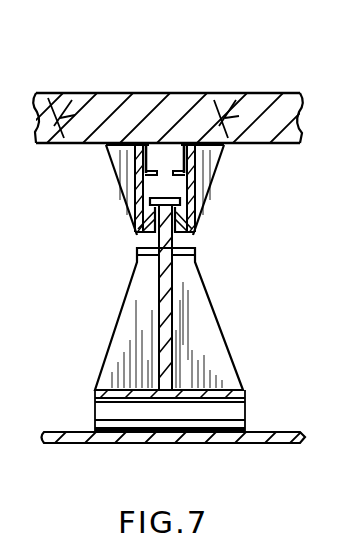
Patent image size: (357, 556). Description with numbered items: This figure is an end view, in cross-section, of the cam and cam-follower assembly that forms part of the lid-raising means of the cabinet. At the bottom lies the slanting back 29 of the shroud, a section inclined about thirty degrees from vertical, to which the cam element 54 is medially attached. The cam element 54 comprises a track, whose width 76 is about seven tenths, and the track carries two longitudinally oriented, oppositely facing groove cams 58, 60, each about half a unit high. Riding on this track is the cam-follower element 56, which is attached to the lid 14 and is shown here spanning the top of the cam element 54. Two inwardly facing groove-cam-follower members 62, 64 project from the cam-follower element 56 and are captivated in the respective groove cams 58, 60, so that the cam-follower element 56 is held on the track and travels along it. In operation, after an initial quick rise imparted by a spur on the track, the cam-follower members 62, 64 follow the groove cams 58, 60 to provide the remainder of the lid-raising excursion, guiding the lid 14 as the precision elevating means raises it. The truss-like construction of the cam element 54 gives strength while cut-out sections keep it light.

The lid 14 is at (77, 95).
The cam-follower element 56 is at (133, 185).
The width of track 76 is at (198, 186).
The groove-cam-follower member 62 is at (137, 233).
The groove-cam-follower member 64 is at (193, 231).
The groove cam 58 is at (132, 243).
The groove cam 60 is at (201, 243).
The cam element 54 is at (106, 360).
The slanting back 29 is at (275, 445).